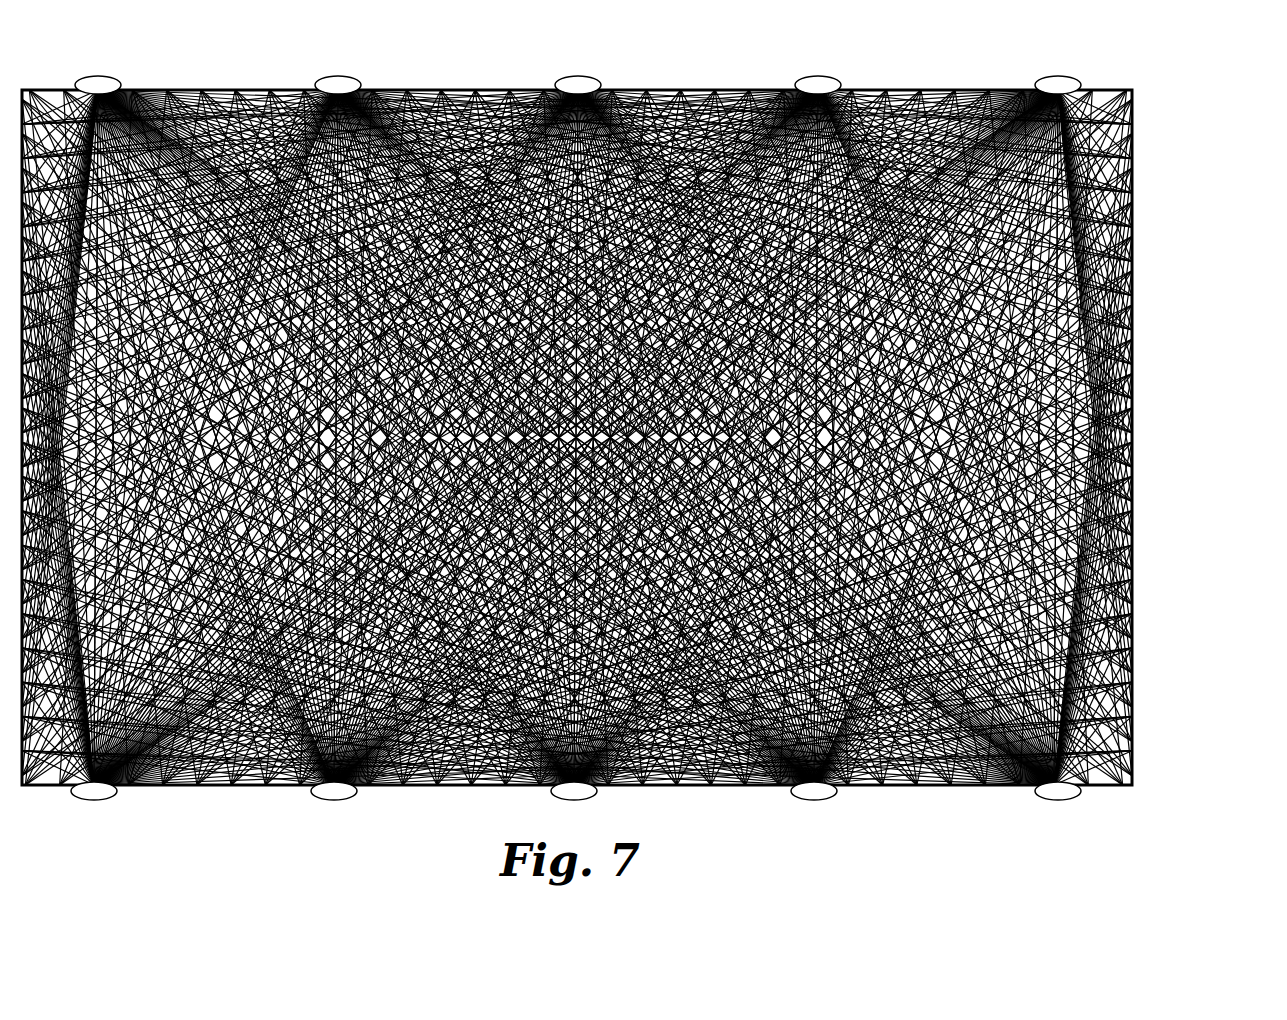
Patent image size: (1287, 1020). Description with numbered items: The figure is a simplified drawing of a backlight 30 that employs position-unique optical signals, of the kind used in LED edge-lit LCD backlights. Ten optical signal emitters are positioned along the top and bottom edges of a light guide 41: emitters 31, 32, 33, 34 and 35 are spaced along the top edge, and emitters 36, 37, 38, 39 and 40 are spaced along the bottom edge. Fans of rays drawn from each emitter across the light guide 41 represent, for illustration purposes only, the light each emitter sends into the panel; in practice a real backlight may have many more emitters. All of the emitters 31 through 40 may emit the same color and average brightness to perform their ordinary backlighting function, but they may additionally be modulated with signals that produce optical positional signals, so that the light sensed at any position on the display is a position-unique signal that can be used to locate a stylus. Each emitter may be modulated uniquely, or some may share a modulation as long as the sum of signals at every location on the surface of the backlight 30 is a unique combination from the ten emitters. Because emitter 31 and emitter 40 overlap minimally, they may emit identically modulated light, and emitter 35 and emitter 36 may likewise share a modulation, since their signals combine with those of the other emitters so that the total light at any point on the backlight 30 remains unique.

The backlight 30 is at (1192, 94).
The optical signal emitter 31 is at (92, 84).
The optical signal emitter 32 is at (332, 84).
The optical signal emitter 33 is at (572, 84).
The optical signal emitter 34 is at (812, 84).
The optical signal emitter 35 is at (1052, 84).
The optical signal emitter 36 is at (88, 794).
The optical signal emitter 37 is at (328, 796).
The optical signal emitter 38 is at (568, 796).
The optical signal emitter 39 is at (808, 796).
The optical signal emitter 40 is at (1052, 796).
The light guide 41 is at (692, 108).